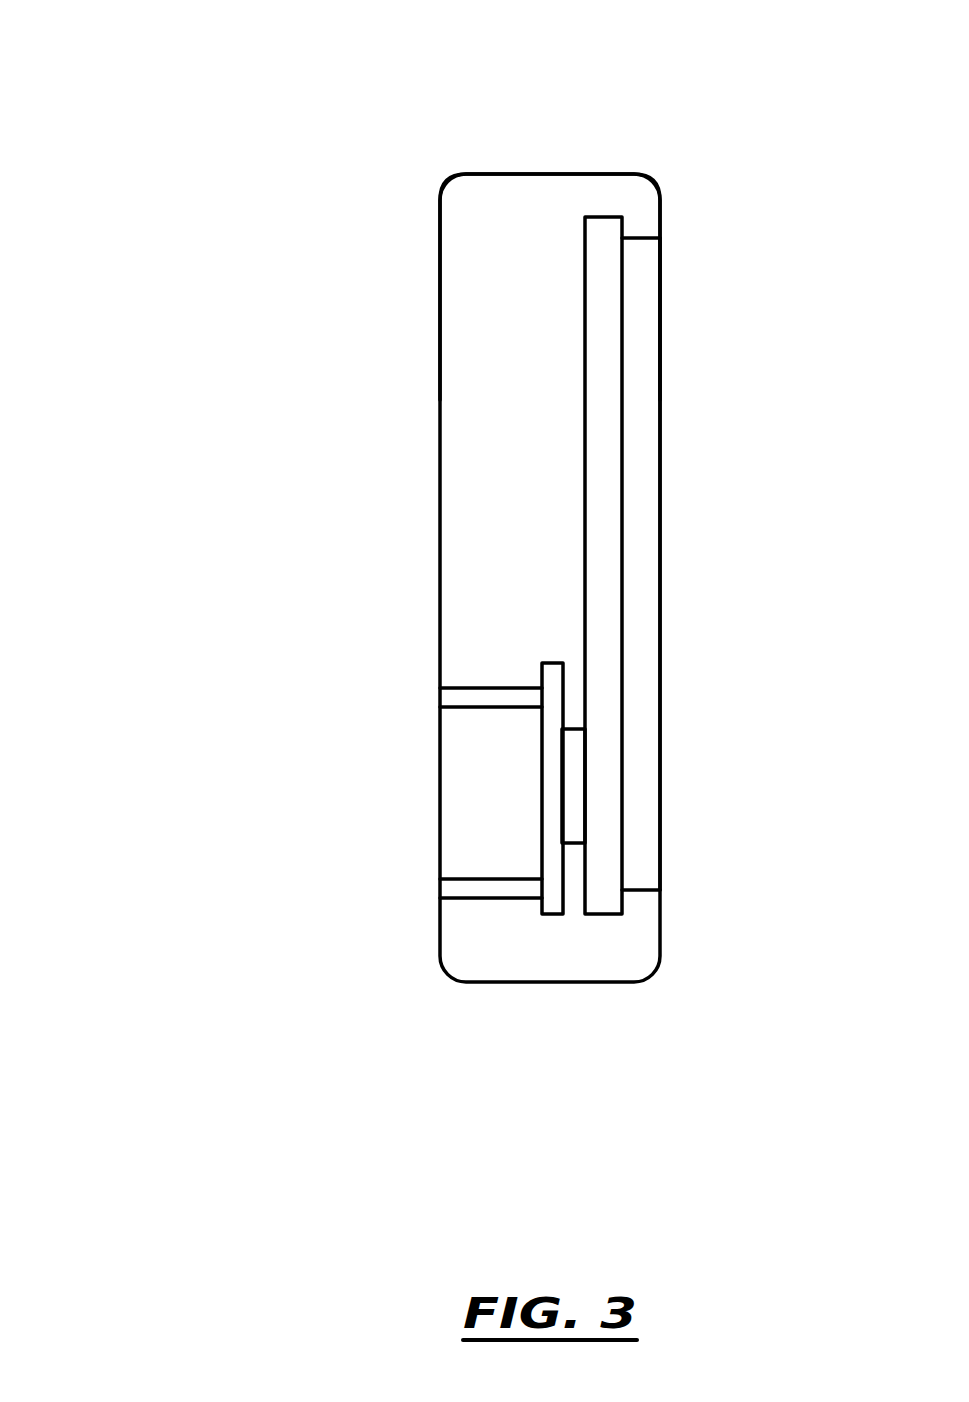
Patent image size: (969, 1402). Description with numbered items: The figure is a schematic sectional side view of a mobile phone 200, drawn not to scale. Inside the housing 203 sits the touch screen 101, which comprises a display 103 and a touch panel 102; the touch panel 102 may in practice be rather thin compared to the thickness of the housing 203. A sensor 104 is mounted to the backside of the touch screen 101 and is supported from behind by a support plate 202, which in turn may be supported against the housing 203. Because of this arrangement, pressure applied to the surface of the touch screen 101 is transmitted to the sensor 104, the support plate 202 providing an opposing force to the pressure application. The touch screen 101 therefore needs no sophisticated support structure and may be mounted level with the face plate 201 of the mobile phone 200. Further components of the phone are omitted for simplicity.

The mobile phone 200 is at (290, 90).
The touch screen 101 is at (658, 153).
The touch panel 102 is at (638, 317).
The display 103 is at (597, 405).
The sensor 104 is at (575, 843).
The face plate 201 is at (660, 208).
The support plate 202 is at (547, 677).
The housing 203 is at (440, 393).